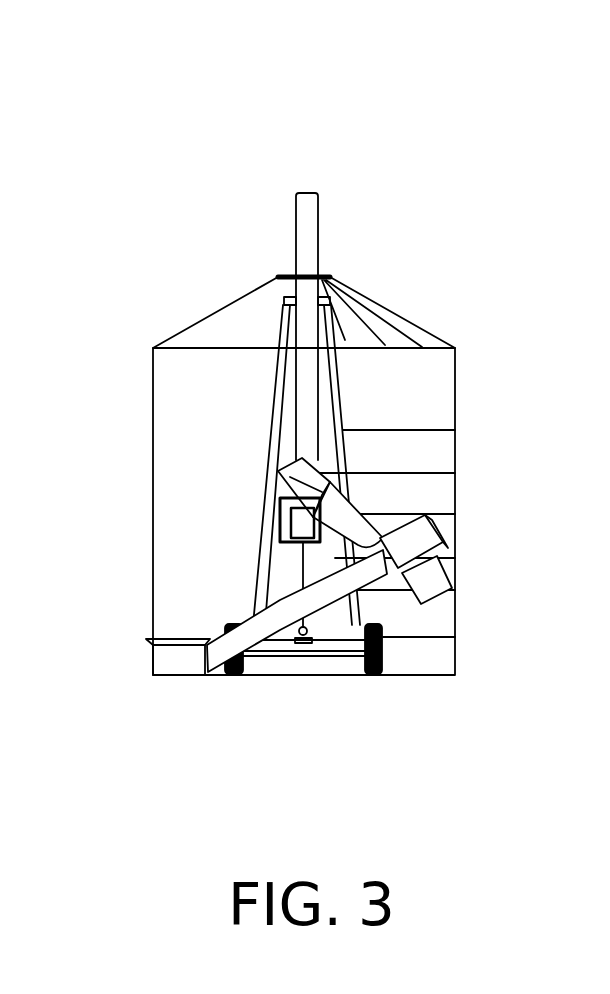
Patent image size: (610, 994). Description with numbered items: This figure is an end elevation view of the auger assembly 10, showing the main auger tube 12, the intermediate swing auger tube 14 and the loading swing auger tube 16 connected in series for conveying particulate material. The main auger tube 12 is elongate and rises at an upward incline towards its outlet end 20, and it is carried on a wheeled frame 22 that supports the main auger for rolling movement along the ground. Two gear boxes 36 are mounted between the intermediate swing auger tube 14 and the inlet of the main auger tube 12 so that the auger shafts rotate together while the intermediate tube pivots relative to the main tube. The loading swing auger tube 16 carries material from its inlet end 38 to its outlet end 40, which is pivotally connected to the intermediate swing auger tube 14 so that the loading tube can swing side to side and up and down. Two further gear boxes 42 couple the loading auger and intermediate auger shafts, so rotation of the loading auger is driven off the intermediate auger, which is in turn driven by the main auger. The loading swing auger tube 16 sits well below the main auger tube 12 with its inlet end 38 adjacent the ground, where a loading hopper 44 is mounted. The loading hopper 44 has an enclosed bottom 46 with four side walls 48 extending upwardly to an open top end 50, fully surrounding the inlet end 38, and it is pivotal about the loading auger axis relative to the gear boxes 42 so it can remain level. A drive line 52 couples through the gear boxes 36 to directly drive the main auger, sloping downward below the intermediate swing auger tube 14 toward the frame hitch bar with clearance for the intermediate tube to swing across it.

The auger assembly 10 is at (304, 175).
The main auger tube 12 is at (303, 372).
The intermediate swing auger tube 14 is at (360, 527).
The loading swing auger tube 16 is at (250, 630).
The outlet end 20 is at (312, 214).
The wheeled frame 22 is at (338, 391).
The gear boxes 36 is at (290, 508).
The inlet end 38 is at (231, 676).
The outlet end 40 is at (312, 561).
The gear boxes 42 is at (440, 540).
The loading hopper 44 is at (145, 660).
The enclosed bottom 46 is at (178, 676).
The side walls 48 is at (178, 657).
The open top end 50 is at (179, 631).
The drive line 52 is at (275, 621).